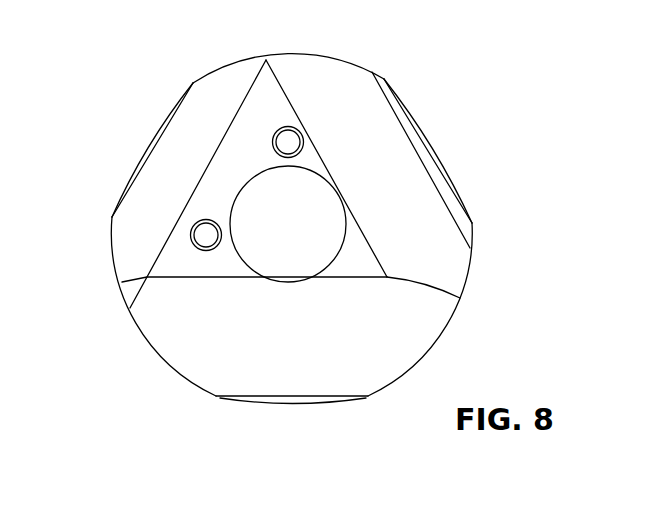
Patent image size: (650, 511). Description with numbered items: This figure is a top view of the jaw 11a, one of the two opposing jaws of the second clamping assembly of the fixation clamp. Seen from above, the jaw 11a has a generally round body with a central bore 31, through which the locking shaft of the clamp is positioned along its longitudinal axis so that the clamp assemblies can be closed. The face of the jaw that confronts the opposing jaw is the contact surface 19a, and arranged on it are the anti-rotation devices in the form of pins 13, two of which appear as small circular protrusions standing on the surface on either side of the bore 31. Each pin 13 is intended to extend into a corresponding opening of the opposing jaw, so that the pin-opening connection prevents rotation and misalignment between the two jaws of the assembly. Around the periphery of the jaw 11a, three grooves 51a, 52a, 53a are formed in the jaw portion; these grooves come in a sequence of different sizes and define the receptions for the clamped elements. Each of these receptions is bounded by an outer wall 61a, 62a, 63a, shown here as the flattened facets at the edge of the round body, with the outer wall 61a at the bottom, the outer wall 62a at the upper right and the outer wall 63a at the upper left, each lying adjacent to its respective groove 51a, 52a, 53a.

The jaw 11a is at (440, 172).
The pin 13 is at (289, 139).
The contact surface 19a is at (353, 262).
The bore 31 is at (259, 278).
The groove 51a is at (332, 362).
The groove 52a is at (363, 186).
The groove 53a is at (178, 163).
The outer wall 61a is at (257, 403).
The outer wall 62a is at (436, 145).
The outer wall 63a is at (166, 113).